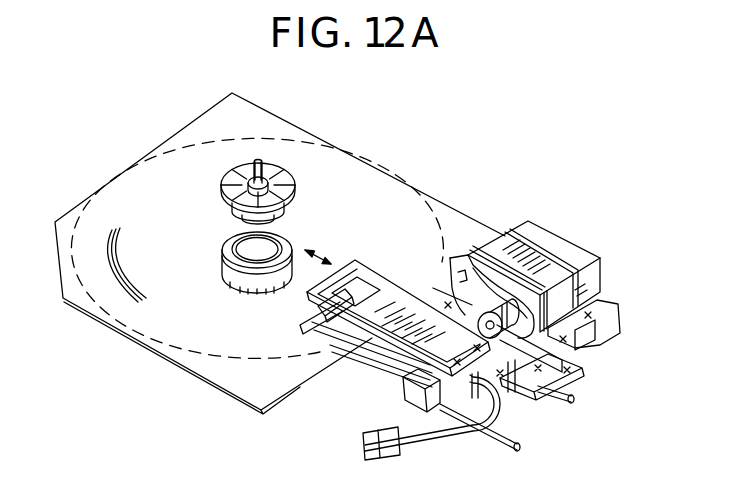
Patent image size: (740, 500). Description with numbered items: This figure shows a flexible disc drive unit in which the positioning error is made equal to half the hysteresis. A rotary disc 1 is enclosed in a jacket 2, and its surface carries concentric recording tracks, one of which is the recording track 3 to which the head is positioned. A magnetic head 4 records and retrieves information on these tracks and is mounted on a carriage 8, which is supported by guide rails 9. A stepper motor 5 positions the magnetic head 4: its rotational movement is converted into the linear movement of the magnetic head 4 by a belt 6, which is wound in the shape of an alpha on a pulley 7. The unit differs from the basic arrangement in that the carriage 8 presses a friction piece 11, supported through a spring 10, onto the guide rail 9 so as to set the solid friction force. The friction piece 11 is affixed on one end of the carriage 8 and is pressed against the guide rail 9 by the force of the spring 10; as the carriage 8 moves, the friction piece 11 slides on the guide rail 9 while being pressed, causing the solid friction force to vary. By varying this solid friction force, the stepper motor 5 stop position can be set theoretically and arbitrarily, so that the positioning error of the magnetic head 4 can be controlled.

The rotary disc 1 is at (378, 192).
The jacket 2 is at (318, 138).
The recording track 3 is at (120, 292).
The magnetic head 4 is at (355, 292).
The stepper motor 5 is at (555, 252).
The belt 6 is at (590, 318).
The pulley 7 is at (449, 262).
The carriage 8 is at (380, 272).
The guide rail 9 is at (547, 395).
The spring 10 is at (412, 387).
The friction piece 11 is at (405, 388).